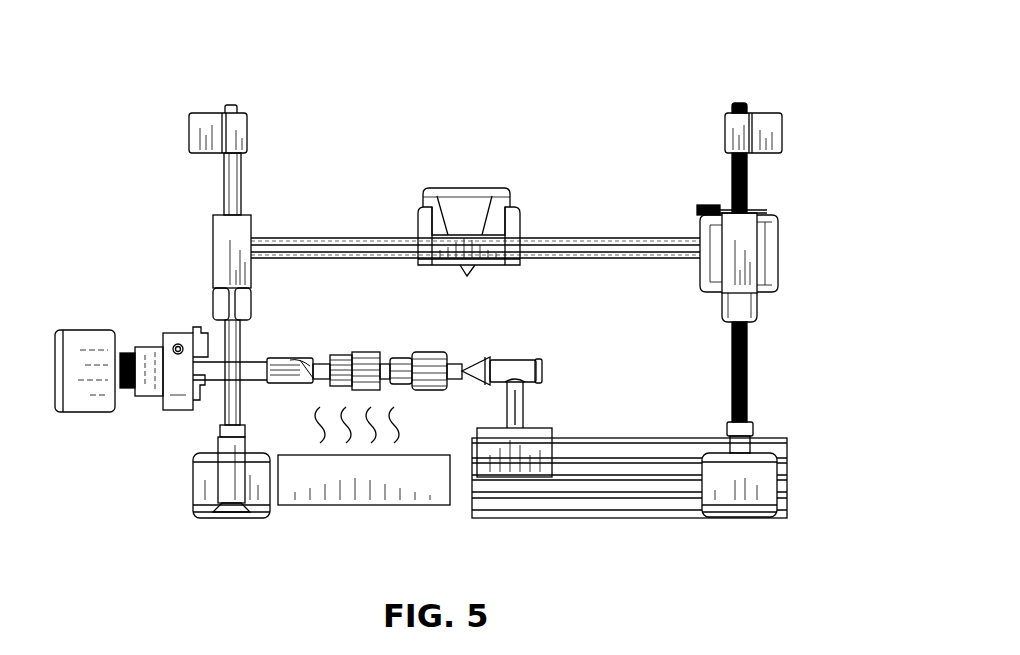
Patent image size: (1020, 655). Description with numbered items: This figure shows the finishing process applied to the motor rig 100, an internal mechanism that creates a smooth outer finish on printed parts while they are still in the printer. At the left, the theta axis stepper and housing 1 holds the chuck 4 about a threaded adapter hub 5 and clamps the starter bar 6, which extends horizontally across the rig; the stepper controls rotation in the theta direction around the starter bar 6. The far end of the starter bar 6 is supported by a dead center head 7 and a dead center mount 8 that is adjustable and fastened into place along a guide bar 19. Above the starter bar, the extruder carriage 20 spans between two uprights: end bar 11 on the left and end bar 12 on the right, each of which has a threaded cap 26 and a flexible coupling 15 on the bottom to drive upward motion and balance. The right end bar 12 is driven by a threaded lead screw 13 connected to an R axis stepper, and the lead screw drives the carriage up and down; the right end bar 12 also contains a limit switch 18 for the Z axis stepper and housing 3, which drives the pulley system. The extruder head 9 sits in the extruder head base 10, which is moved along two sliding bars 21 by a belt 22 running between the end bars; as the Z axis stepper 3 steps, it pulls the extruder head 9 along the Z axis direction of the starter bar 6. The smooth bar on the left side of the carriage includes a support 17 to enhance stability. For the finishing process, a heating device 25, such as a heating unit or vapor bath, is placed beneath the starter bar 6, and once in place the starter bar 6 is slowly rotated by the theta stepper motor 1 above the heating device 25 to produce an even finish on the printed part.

The motor rig 100 is at (597, 36).
The theta axis stepper and housing 1 is at (78, 340).
The Z axis stepper and housing 3 is at (710, 270).
The chuck 4 is at (151, 358).
The threaded adapter hub 5 is at (128, 388).
The starter bar 6 is at (330, 358).
The dead center head 7 is at (473, 365).
The dead center mount 8 is at (520, 360).
The extruder head 9 is at (470, 190).
The extruder head base 10 is at (503, 265).
The end bar 11 is at (213, 246).
The end bar 12 is at (760, 245).
The threaded lead screw 13 is at (748, 385).
The flexible coupling 15 is at (753, 432).
The support 17 is at (242, 447).
The limit switch 18 is at (712, 205).
The guide bar 19 is at (585, 484).
The extruder carriage 20 is at (583, 206).
The sliding bars 21 is at (285, 244).
The belt 22 is at (365, 238).
The heating device 25 is at (355, 500).
The threaded cap 26 is at (757, 300).